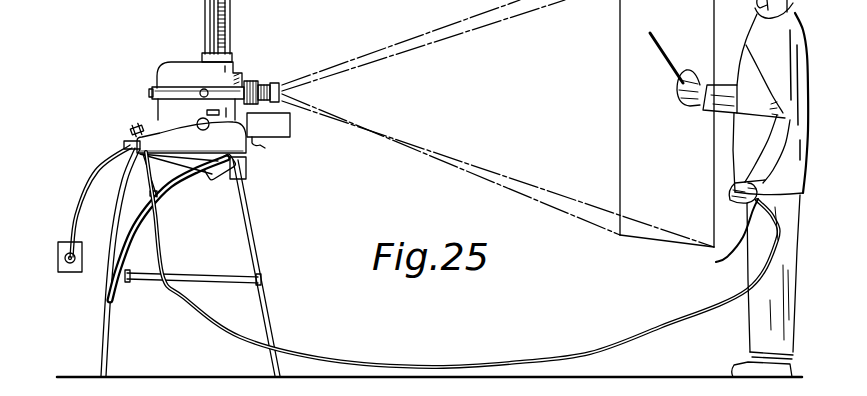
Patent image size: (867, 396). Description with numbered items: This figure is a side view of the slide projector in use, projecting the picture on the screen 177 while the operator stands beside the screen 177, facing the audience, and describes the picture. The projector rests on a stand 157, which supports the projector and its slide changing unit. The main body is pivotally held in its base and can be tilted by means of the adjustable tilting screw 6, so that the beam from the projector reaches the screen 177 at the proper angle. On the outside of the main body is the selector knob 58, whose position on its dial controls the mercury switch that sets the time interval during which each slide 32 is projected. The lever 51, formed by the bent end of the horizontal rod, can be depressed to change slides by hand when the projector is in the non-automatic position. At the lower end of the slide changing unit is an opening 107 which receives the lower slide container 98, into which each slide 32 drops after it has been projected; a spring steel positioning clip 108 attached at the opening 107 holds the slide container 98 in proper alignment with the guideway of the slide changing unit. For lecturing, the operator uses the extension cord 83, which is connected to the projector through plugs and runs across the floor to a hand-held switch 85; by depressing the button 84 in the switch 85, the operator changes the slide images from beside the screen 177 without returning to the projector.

The adjustable tilting screw 6 is at (138, 126).
The slide 32 is at (224, 33).
The lever 51 is at (206, 112).
The selector knob 58 is at (203, 90).
The extension cord 83 is at (590, 352).
The button 84 is at (727, 196).
The switch 85 is at (718, 261).
The lower slide container 98 is at (207, 40).
The opening 107 is at (282, 104).
The spring steel positioning clip 108 is at (262, 147).
The stand 157 is at (253, 231).
The screen 177 is at (627, 123).